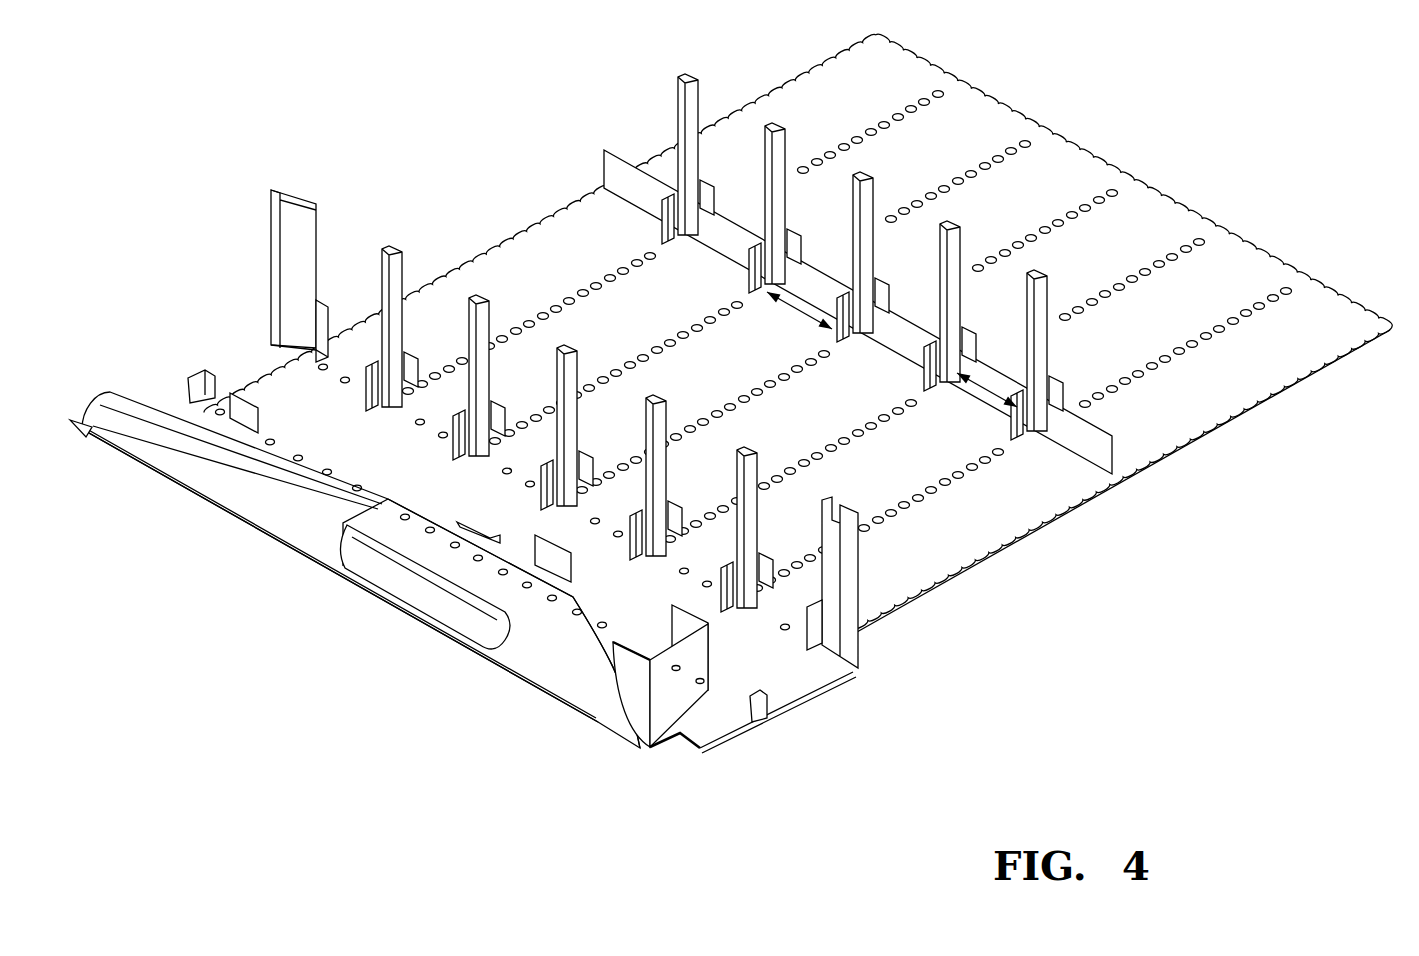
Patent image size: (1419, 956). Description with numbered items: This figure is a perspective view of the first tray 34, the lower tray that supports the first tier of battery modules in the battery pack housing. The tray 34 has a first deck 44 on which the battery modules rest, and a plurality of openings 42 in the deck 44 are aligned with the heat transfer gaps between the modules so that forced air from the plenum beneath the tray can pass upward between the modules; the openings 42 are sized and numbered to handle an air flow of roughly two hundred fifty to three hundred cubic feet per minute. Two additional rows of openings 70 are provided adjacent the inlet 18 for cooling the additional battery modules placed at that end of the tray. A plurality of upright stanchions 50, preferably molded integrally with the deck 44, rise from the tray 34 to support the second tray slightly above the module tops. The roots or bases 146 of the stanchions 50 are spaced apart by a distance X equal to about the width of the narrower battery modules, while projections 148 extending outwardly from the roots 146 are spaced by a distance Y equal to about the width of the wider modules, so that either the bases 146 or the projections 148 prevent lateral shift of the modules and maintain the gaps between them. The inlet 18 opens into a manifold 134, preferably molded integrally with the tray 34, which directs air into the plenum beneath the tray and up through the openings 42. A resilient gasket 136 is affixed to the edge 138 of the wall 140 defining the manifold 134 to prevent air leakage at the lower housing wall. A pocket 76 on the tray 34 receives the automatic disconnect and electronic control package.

The first tray 34 is at (1172, 196).
The openings 42 is at (1023, 141).
The deck 44 is at (1340, 314).
The stanchions 50 is at (789, 203).
The roots or bases 146 is at (752, 286).
The projections 148 is at (758, 262).
The openings 70 is at (322, 366).
The pocket 76 is at (690, 614).
The manifold 134 is at (576, 655).
The resilient gasket 136 is at (284, 548).
The edge 138 is at (82, 428).
The wall 140 is at (228, 492).
The inlet 18 is at (418, 606).
The distance X is at (1000, 391).
The distance Y is at (800, 313).